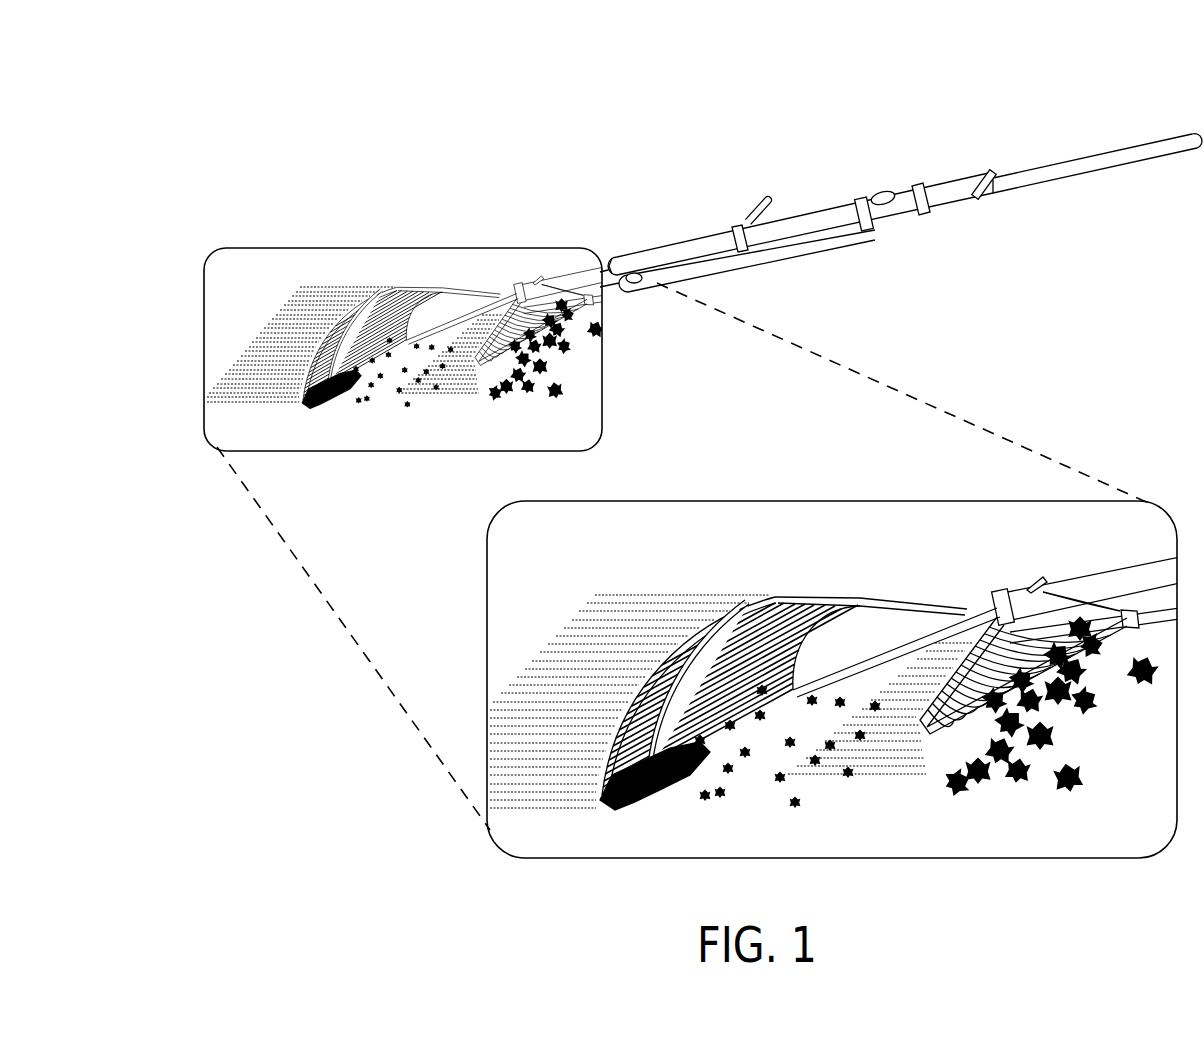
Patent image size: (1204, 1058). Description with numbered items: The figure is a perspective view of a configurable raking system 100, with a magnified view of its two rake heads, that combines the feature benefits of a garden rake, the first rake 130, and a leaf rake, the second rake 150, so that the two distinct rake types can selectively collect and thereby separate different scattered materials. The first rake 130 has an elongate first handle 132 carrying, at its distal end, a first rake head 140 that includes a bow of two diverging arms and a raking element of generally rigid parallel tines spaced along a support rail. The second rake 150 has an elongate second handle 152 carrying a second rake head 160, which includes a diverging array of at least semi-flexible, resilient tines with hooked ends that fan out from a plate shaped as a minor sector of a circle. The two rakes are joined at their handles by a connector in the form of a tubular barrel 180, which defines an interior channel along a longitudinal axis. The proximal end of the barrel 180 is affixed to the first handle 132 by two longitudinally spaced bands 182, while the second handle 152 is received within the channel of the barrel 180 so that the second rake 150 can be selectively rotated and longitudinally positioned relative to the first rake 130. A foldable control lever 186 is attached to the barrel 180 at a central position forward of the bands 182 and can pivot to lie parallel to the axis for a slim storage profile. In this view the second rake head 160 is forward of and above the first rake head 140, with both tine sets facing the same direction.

The raking system 100 is at (548, 180).
The first rake 130 is at (823, 261).
The first handle 132 is at (1043, 177).
The first rake head 140 is at (927, 793).
The second rake 150 is at (609, 223).
The second handle 152 is at (952, 183).
The second rake head 160 is at (867, 592).
The tubular barrel 180 is at (803, 221).
The bands 182 is at (864, 199).
The foldable control lever 186 is at (763, 198).